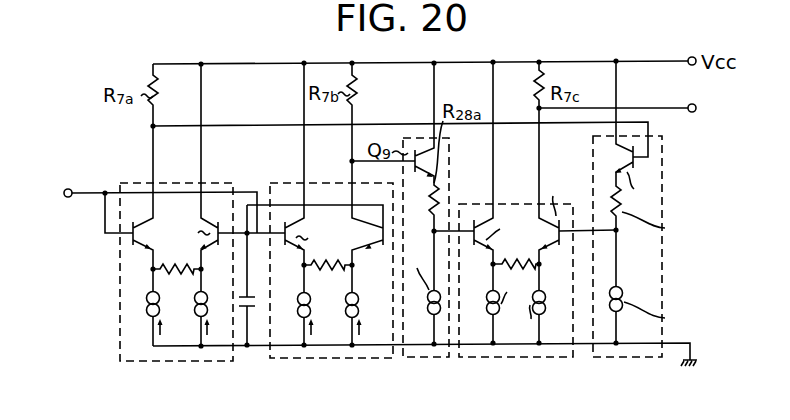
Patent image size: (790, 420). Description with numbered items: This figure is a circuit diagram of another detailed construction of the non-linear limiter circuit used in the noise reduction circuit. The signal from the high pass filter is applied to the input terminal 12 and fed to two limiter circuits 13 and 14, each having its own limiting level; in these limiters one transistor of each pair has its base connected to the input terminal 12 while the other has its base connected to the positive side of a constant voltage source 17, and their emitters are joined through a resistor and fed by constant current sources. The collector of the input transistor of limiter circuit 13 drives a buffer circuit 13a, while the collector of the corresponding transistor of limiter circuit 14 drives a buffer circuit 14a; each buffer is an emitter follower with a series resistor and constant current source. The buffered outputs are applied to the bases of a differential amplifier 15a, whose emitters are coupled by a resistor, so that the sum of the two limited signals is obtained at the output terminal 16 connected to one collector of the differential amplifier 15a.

The input terminal 12 is at (160, 196).
The limiter circuit 13 is at (165, 362).
The limiter circuit 14 is at (343, 360).
The constant voltage source 17 is at (253, 308).
The buffer circuit 14a is at (432, 365).
The differential amplifier 15a is at (540, 365).
The buffer circuit 13a is at (640, 362).
The output terminal 16 is at (697, 111).